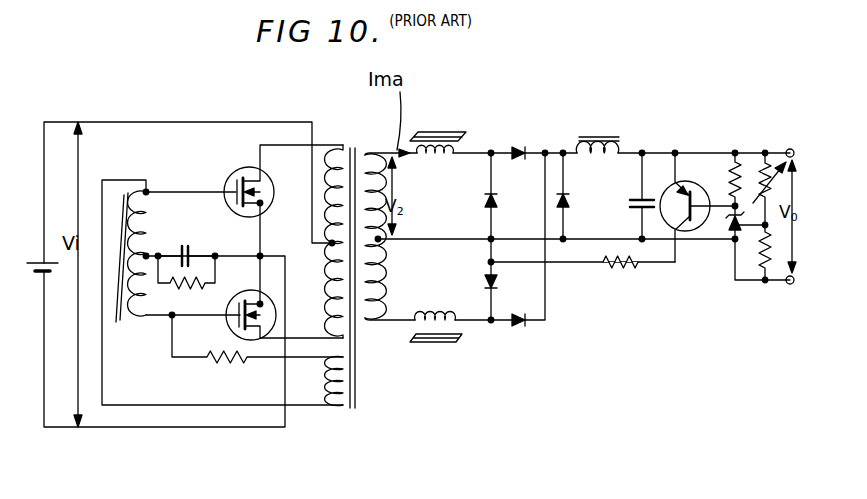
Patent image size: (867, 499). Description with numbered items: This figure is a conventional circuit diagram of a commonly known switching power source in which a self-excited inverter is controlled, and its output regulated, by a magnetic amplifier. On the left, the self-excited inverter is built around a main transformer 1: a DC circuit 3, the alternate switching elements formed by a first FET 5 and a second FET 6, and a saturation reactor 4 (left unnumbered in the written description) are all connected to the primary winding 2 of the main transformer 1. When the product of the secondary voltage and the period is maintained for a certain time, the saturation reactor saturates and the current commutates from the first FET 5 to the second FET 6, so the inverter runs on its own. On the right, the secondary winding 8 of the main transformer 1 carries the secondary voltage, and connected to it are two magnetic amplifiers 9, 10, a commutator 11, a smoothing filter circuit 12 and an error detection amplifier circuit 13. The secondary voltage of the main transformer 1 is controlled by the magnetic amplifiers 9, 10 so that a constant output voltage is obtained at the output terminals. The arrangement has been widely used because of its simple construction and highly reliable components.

The main transformer 1 is at (356, 354).
The primary winding 2 is at (338, 160).
The DC circuit 3 is at (54, 273).
The feedback winding 4 is at (197, 187).
The first FET 5 is at (272, 305).
The second FET 6 is at (266, 185).
The secondary winding 8 is at (379, 176).
The magnetic amplifier 9 is at (456, 152).
The magnetic amplifier 10 is at (456, 336).
The commutator 11 is at (568, 200).
The smoothing filter circuit 12 is at (625, 135).
The error detection amplifier circuit 13 is at (733, 282).